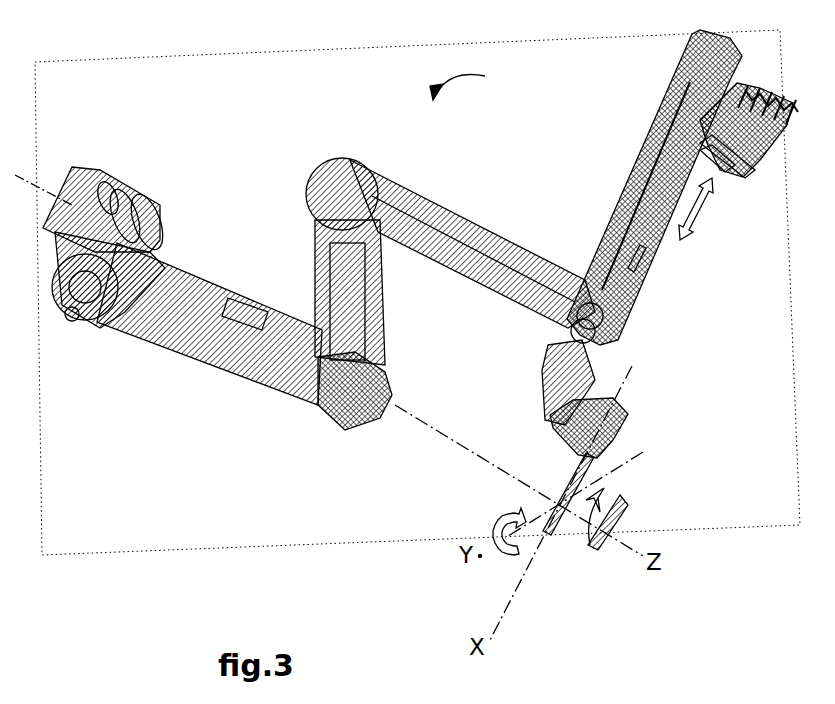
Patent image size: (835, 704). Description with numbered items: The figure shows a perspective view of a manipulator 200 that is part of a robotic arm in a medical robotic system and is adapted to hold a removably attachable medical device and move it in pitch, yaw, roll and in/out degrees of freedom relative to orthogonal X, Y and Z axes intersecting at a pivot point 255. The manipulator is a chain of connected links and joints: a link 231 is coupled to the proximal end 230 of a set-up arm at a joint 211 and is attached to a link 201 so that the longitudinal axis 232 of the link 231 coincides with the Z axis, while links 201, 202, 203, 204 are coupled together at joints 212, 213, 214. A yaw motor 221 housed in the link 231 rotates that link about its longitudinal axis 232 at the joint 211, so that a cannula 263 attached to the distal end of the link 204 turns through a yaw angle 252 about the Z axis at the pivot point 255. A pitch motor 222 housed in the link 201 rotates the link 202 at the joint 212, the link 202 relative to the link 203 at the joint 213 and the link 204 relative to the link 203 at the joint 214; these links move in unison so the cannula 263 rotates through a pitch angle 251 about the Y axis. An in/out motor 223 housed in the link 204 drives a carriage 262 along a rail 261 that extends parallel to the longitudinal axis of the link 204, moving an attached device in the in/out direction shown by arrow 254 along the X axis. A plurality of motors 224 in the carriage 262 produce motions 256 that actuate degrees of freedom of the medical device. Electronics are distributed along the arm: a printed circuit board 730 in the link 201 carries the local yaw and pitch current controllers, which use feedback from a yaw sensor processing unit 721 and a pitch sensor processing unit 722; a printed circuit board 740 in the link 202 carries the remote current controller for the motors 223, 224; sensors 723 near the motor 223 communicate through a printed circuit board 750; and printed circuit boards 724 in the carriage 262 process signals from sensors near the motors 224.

The manipulator 200 is at (460, 81).
The link 201 is at (287, 400).
The link 202 is at (380, 312).
The link 203 is at (413, 197).
The link 204 is at (618, 203).
The joint 211 is at (96, 168).
The joint 212 is at (338, 424).
The joint 213 is at (322, 173).
The joint 214 is at (571, 278).
The yaw motor 221 is at (110, 190).
The pitch motor 222 is at (127, 320).
The in/out (I/O) motor 223 is at (548, 345).
The plurality of motors 224 is at (748, 173).
The proximal end of set-up arm 230 is at (58, 183).
The link 231 is at (146, 203).
The longitudinal axis 232 is at (427, 423).
The pitch angle 251 is at (495, 560).
The yaw angle 252 is at (597, 547).
The arrow 254 is at (710, 227).
The pivot point 255 is at (558, 507).
The motions 256 is at (767, 97).
The rail 261 is at (637, 260).
The carriage 262 is at (760, 157).
The cannula 263 is at (623, 432).
The yaw sensor processing unit 721 is at (116, 210).
The pitch sensor processing unit 722 is at (73, 320).
The sensors 723 is at (552, 328).
The printed circuit boards 724 is at (723, 173).
The printed circuit board 730 is at (244, 298).
The printed circuit board 740 is at (338, 282).
The printed circuit board 750 is at (663, 122).